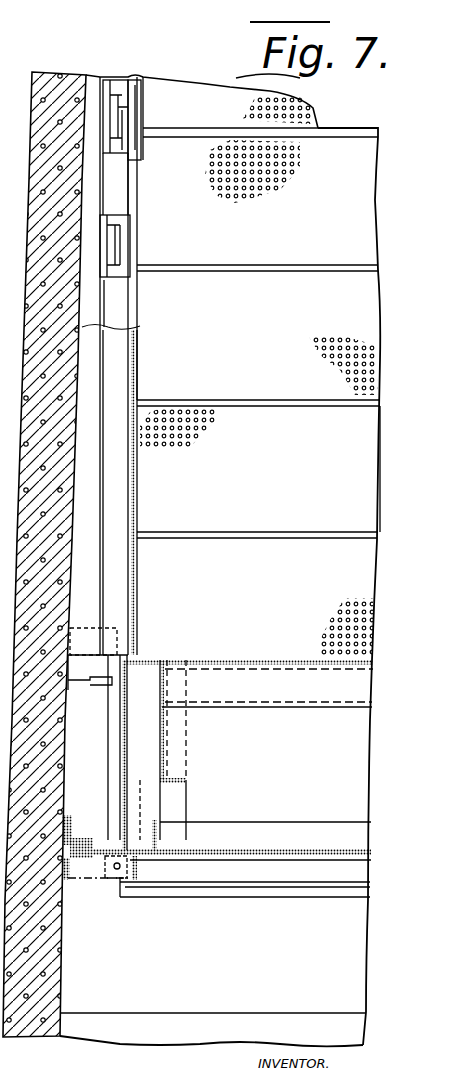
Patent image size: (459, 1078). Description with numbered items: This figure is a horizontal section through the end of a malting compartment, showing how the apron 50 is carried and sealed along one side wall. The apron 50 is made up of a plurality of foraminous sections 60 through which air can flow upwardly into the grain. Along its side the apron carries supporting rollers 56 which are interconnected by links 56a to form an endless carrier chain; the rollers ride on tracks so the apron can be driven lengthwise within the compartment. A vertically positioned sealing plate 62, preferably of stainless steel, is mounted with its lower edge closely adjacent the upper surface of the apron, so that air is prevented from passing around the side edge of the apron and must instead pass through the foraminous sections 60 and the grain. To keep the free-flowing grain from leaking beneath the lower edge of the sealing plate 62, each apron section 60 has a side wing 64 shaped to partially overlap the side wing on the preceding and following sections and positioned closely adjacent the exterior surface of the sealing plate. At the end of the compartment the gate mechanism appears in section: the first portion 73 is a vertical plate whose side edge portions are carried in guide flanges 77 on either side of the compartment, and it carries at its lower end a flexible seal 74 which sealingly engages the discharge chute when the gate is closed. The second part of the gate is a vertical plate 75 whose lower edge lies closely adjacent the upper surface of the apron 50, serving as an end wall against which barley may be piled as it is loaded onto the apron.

The apron 50 is at (278, 366).
The supporting rollers 56 is at (114, 115).
The links 56a is at (104, 305).
The foraminous sections 60 is at (362, 222).
The sealing plate 62 is at (137, 487).
The side wing 64 is at (143, 122).
The first portion of gate 73 is at (296, 852).
The flexible seal 74 is at (225, 898).
The vertical plate 75 is at (262, 660).
The guide flanges 77 is at (85, 835).